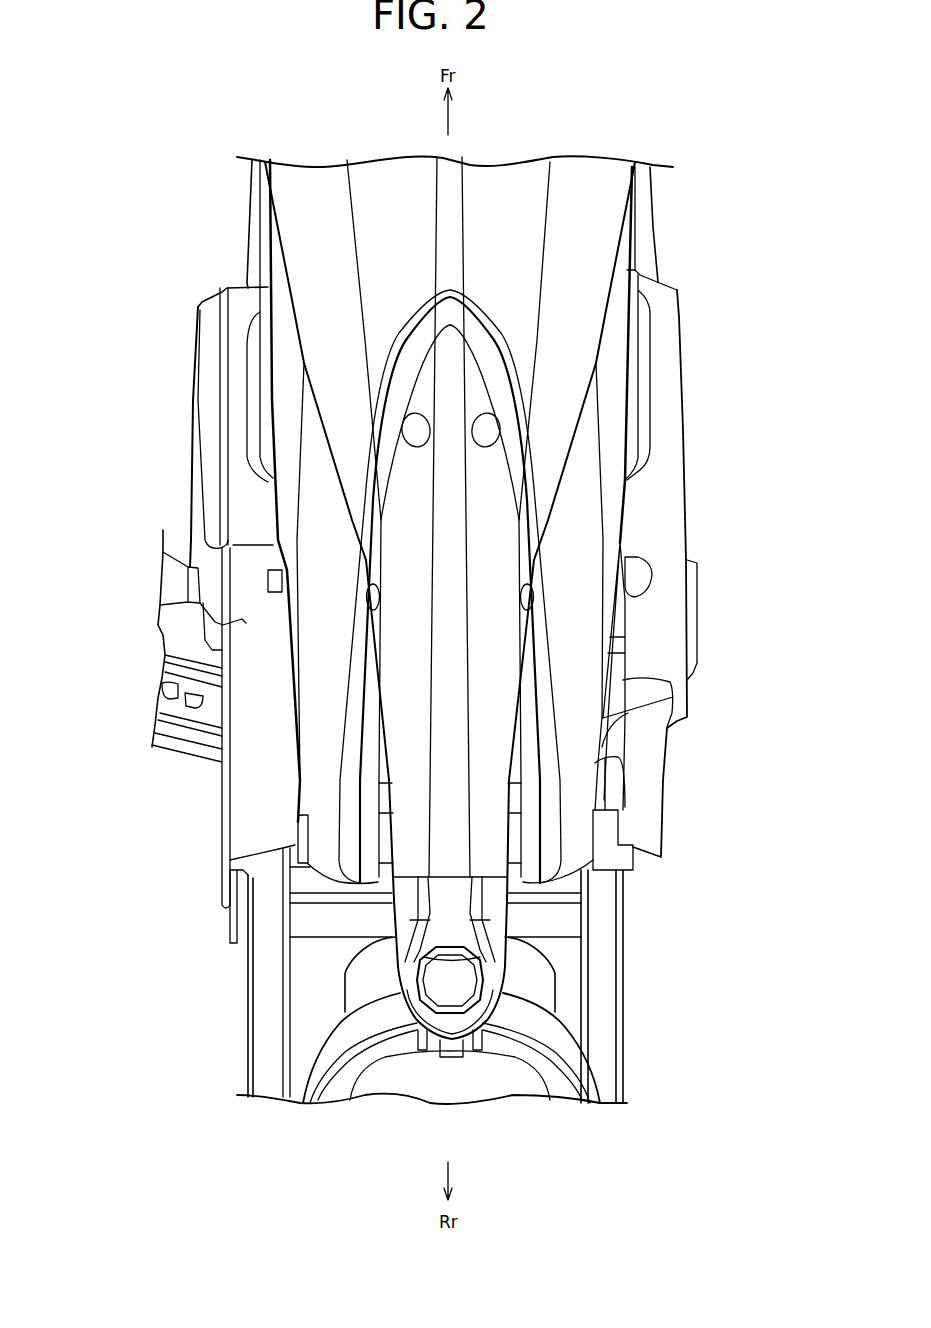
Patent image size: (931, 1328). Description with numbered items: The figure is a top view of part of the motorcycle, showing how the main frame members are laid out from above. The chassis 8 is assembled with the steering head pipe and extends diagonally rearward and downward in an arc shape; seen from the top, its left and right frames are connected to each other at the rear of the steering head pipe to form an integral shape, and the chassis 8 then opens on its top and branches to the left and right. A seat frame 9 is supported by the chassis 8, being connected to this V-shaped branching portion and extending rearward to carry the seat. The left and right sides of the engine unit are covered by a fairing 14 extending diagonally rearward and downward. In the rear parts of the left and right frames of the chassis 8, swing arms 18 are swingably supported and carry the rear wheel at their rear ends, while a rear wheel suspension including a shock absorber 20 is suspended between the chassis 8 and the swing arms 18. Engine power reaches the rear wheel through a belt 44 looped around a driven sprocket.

The chassis 8 is at (592, 187).
The seat frame 9 is at (455, 835).
The fairing 14 is at (197, 420).
The swing arms 18 is at (600, 958).
The shock absorber 20 is at (496, 1076).
The belt 44 is at (265, 1010).